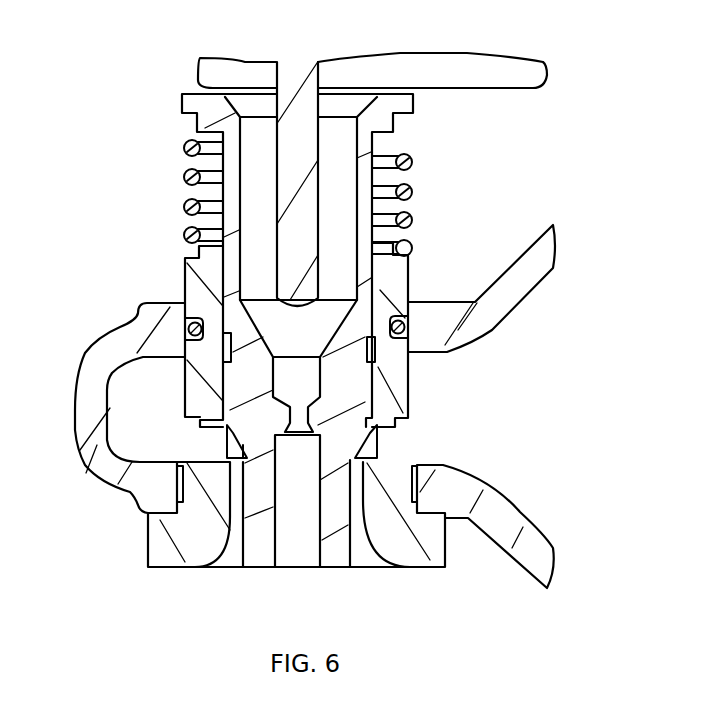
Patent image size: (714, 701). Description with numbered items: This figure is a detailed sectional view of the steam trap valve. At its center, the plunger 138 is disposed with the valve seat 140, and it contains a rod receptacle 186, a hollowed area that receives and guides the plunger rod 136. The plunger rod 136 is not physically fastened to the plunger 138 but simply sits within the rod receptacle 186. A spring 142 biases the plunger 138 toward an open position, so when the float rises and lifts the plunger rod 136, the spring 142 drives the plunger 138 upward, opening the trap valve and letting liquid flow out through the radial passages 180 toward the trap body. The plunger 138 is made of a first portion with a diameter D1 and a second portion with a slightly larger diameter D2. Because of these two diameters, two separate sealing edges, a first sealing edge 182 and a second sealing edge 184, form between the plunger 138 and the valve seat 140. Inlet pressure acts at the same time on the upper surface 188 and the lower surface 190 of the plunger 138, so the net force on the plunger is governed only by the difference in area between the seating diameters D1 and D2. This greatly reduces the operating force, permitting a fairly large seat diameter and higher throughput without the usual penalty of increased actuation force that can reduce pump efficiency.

The plunger rod 136 is at (318, 63).
The plunger 138 is at (383, 105).
The valve seat 140 is at (393, 540).
The spring 142 is at (410, 213).
The radial passages 180 is at (215, 443).
The first sealing edge 182 is at (222, 390).
The second sealing edge 184 is at (222, 298).
The rod receptacle 186 is at (240, 127).
The upper surface 188 is at (253, 153).
The lower surface 190 is at (318, 568).
The diameter of the first portion D1 is at (241, 428).
The diameter of the second portion D2 is at (204, 366).